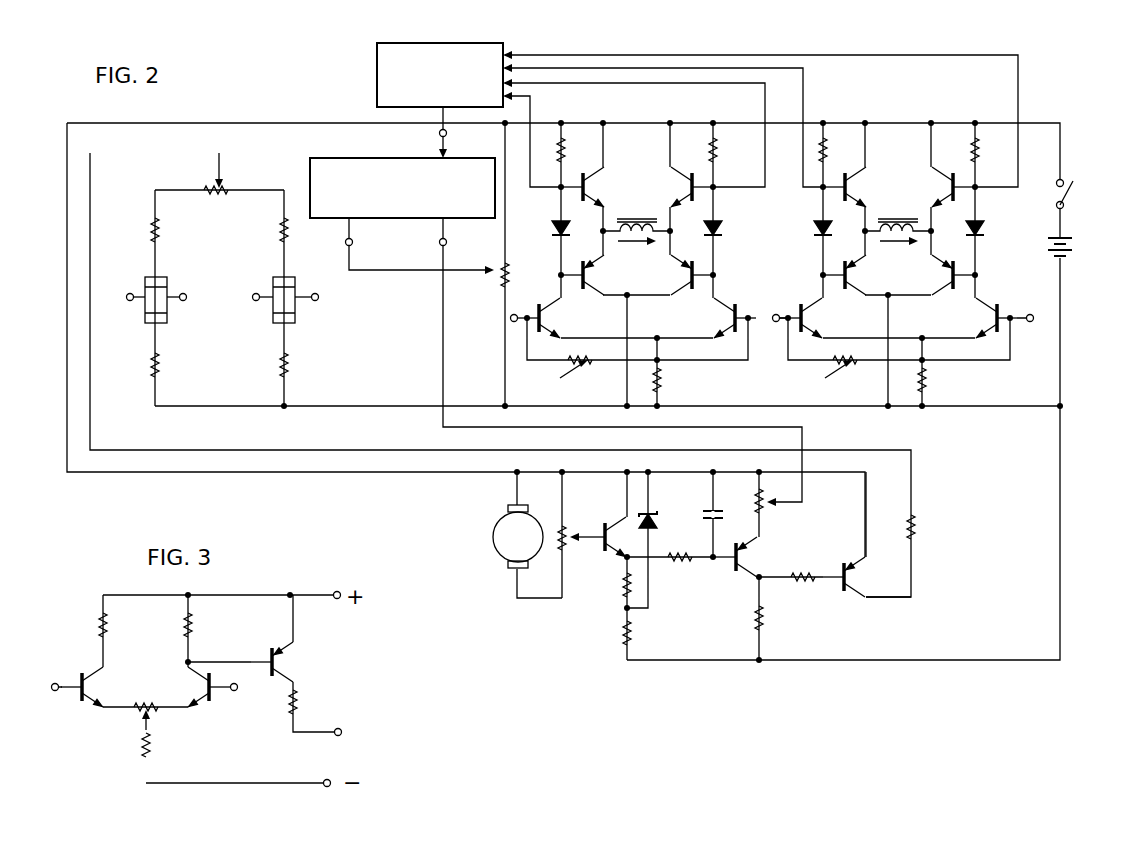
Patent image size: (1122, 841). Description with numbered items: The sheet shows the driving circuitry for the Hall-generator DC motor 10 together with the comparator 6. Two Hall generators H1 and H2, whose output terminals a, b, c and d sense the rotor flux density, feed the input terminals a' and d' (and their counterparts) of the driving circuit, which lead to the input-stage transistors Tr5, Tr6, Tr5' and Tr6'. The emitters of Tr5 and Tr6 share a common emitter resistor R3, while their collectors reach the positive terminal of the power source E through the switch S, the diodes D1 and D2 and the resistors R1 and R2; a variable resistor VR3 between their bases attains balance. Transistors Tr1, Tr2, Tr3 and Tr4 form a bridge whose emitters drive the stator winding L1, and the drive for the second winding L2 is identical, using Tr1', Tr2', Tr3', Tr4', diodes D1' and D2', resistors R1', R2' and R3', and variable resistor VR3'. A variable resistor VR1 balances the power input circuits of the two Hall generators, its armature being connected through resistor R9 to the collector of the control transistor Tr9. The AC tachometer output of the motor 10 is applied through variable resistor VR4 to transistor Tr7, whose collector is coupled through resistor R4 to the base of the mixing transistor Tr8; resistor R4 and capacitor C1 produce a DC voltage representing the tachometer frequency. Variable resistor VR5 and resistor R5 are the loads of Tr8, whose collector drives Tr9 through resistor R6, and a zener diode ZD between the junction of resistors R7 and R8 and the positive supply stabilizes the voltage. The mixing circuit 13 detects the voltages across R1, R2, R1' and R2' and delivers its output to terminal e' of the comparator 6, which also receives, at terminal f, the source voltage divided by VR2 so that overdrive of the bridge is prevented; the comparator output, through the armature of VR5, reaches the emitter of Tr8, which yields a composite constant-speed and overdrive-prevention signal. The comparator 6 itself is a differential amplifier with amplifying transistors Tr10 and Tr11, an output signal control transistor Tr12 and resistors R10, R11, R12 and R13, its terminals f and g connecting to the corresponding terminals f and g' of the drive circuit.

In FIG. 2, the mixing circuit 13 is at (377, 77).
In FIG. 2, the comparator 6 is at (378, 218).
In FIG. 2, the motor 10 is at (492, 537).
In FIG. 2, the variable resistor VR1 is at (224, 183).
In FIG. 2, the voltage divider VR2 is at (503, 290).
In FIG. 2, the variable resistor VR3 is at (590, 382).
In FIG. 2, the variable resistor VR3' is at (855, 380).
In FIG. 2, the variable resistor VR4 is at (565, 530).
In FIG. 2, the variable resistor VR5 is at (765, 506).
In FIG. 2, the Hall generator H1 is at (160, 277).
In FIG. 2, the Hall generator H2 is at (273, 312).
In FIG. 2, the resistor R1 is at (584, 147).
In FIG. 2, the resistor R2 is at (735, 147).
In FIG. 2, the common emitter resistor R3 is at (686, 379).
In FIG. 2, the resistor R1' is at (842, 127).
In FIG. 2, the resistor R2' is at (992, 127).
In FIG. 2, the common emitter resistor R3' is at (950, 377).
In FIG. 2, the resistor R4 is at (688, 568).
In FIG. 2, the resistor R5 is at (765, 620).
In FIG. 2, the resistor R6 is at (806, 590).
In FIG. 2, the resistor R7 is at (622, 588).
In FIG. 2, the resistor R8 is at (633, 632).
In FIG. 2, the resistor R9 is at (917, 523).
In FIG. 3, the resistor R10 is at (108, 621).
In FIG. 3, the resistor R11 is at (193, 621).
In FIG. 3, the resistor R12 is at (135, 710).
In FIG. 3, the resistor R13 is at (153, 742).
In FIG. 2, the driving transistor Tr1 is at (603, 180).
In FIG. 2, the transistor Tr2 is at (603, 271).
In FIG. 2, the driving transistor Tr3 is at (662, 192).
In FIG. 2, the transistor Tr4 is at (685, 294).
In FIG. 2, the transistor Tr5 is at (561, 318).
In FIG. 2, the transistor Tr6 is at (735, 296).
In FIG. 2, the driving transistor Tr1' is at (867, 178).
In FIG. 2, the transistor Tr2' is at (875, 275).
In FIG. 2, the driving transistor Tr3' is at (925, 192).
In FIG. 2, the transistor Tr4' is at (940, 291).
In FIG. 2, the transistor Tr5' is at (831, 318).
In FIG. 2, the transistor Tr6' is at (999, 299).
In FIG. 2, the transistor Tr7 is at (605, 546).
In FIG. 2, the mixing transistor Tr8 is at (747, 557).
In FIG. 2, the control transistor Tr9 is at (854, 592).
In FIG. 3, the amplifying transistor Tr10 is at (100, 681).
In FIG. 3, the amplifying transistor Tr11 is at (203, 712).
In FIG. 3, the output signal control transistor Tr12 is at (288, 662).
In FIG. 2, the diode D1 is at (540, 218).
In FIG. 2, the diode D2 is at (740, 221).
In FIG. 2, the diode D1' is at (802, 239).
In FIG. 2, the diode D2' is at (1001, 210).
In FIG. 2, the stator winding L1 is at (645, 243).
In FIG. 2, the stator winding L2 is at (903, 243).
In FIG. 2, the zener diode ZD is at (655, 514).
In FIG. 2, the capacitor C1 is at (706, 515).
In FIG. 2, the switch S is at (1075, 194).
In FIG. 2, the power source E is at (1045, 252).
In FIG. 2, the output terminal a is at (133, 286).
In FIG. 2, the output terminal b is at (179, 286).
In FIG. 2, the output terminal c is at (262, 286).
In FIG. 2, the output terminal d is at (310, 286).
In FIG. 2, the input terminal e' is at (455, 132).
In FIG. 2, the terminal f is at (412, 246).
In FIG. 3, the terminal f is at (240, 689).
In FIG. 2, the terminal g' is at (621, 362).
In FIG. 2, the input terminal a' is at (520, 303).
In FIG. 2, the input terminal d' is at (1039, 307).
In FIG. 3, the terminal g is at (348, 734).